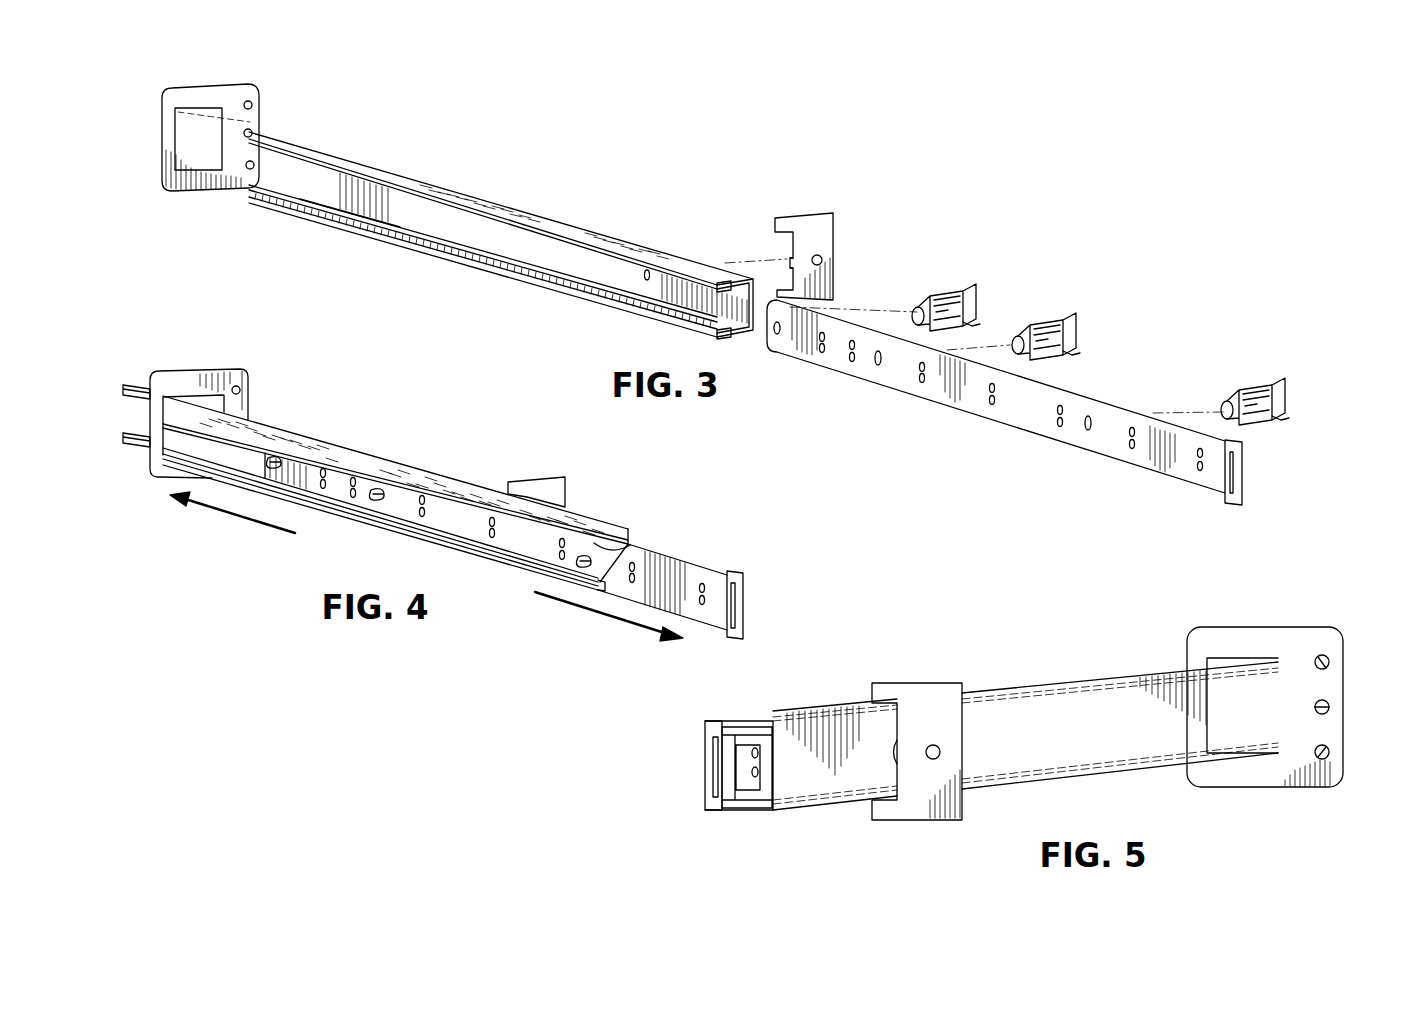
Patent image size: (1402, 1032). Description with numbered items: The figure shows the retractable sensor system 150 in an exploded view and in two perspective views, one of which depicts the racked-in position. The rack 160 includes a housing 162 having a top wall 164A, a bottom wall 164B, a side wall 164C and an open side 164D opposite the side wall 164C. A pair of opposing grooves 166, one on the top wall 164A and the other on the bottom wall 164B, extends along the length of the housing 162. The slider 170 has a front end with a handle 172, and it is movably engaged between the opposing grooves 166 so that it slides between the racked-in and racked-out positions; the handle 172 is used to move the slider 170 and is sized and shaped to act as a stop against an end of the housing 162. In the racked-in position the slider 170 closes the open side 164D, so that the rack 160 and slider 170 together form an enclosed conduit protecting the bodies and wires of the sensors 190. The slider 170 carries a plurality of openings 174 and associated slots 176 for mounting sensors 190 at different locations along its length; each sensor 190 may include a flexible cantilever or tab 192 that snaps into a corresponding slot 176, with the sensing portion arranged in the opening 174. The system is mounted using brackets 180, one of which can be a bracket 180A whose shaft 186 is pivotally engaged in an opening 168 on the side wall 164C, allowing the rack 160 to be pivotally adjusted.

In FIG. 3, the retractable sensor system 150 is at (893, 180).
In FIG. 4, the retractable sensor system 150 is at (275, 585).
In FIG. 5, the retractable sensor system 150 is at (962, 643).
In FIG. 3, the rack 160 is at (481, 188).
In FIG. 4, the rack 160 is at (270, 412).
In FIG. 5, the rack 160 is at (1070, 785).
In FIG. 3, the housing 162 is at (388, 170).
In FIG. 4, the housing 162 is at (315, 440).
In FIG. 3, the top wall 164A is at (614, 238).
In FIG. 5, the top wall 164A is at (1052, 683).
In FIG. 3, the bottom wall 164B is at (505, 280).
In FIG. 5, the bottom wall 164B is at (745, 812).
In FIG. 3, the side wall 164C is at (435, 218).
In FIG. 5, the side wall 164C is at (1095, 733).
In FIG. 3, the open side 164D is at (343, 203).
In FIG. 3, the opposing grooves 166 is at (719, 282).
In FIG. 4, the opposing grooves 166 is at (598, 583).
In FIG. 3, the opening 168 is at (641, 282).
In FIG. 3, the slider 170 is at (1110, 405).
In FIG. 4, the slider 170 is at (693, 562).
In FIG. 5, the slider 170 is at (752, 740).
In FIG. 3, the handle 172 is at (1222, 497).
In FIG. 4, the handle 172 is at (745, 608).
In FIG. 5, the handle 172 is at (710, 806).
In FIG. 3, the openings 174 is at (782, 345).
In FIG. 3, the slots 176 is at (852, 363).
In FIG. 3, the brackets 180 is at (253, 118).
In FIG. 4, the brackets 180 is at (222, 370).
In FIG. 5, the brackets 180 is at (1335, 790).
In FIG. 3, the bracket 180A is at (813, 217).
In FIG. 4, the bracket 180A is at (540, 482).
In FIG. 5, the bracket 180A is at (912, 820).
In FIG. 3, the shaft 186 is at (788, 258).
In FIG. 3, the sensors 190 is at (952, 300).
In FIG. 4, the sensors 190 is at (378, 501).
In FIG. 3, the flexible cantilever or tab 192 is at (968, 320).